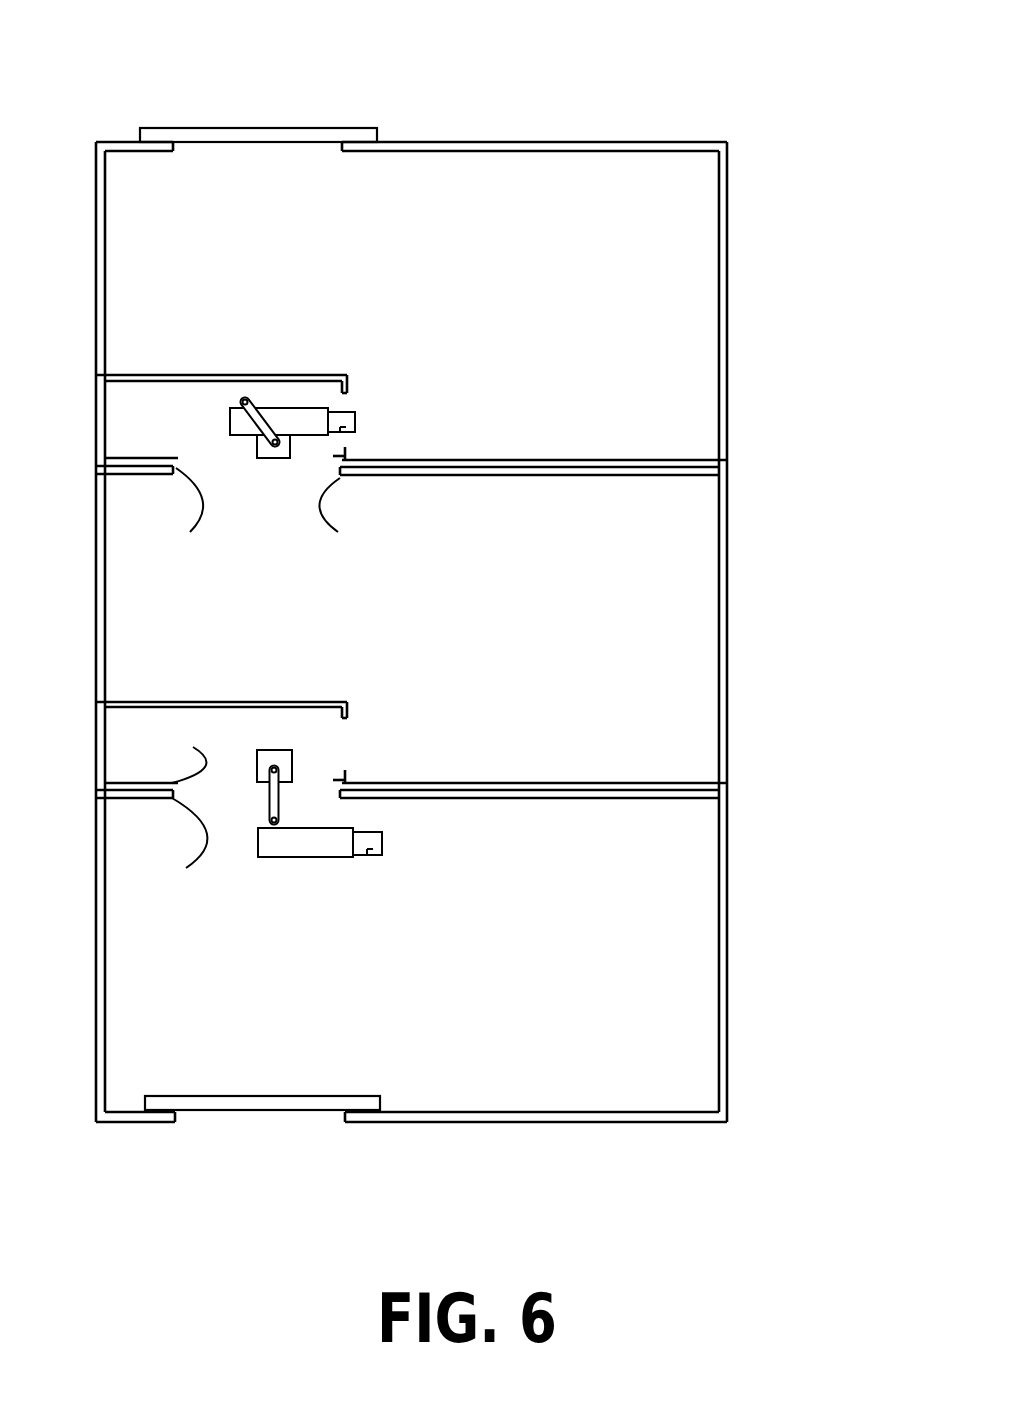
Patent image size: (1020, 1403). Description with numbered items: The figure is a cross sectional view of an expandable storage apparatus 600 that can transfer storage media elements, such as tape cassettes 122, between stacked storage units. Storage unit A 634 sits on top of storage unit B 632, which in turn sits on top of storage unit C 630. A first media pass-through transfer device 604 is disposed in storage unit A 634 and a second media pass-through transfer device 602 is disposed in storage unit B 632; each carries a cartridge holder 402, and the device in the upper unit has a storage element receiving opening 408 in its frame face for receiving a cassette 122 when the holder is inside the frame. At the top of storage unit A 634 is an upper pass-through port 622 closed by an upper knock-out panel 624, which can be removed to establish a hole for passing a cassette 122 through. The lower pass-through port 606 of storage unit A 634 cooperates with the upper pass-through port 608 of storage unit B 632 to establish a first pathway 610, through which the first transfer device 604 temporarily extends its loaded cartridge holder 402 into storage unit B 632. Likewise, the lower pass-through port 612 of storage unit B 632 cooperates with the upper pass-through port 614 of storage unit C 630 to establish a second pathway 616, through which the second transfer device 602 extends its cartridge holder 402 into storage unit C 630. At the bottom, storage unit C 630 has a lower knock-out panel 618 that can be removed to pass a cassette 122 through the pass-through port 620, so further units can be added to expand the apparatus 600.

The expandable storage apparatus 600 is at (614, 70).
The upper knock-out panel 624 is at (237, 128).
The upper pass-through port 622 is at (273, 168).
The storage unit A 634 is at (728, 370).
The first media pass-through transfer device 604 is at (246, 362).
The cartridge holder 402 is at (230, 430).
The storage element receiving opening 408 is at (377, 405).
The lower pass-through port 606 is at (190, 532).
The upper pass-through port 608 is at (338, 532).
The storage unit B 632 is at (728, 692).
The first pathway 610 is at (249, 490).
The second media pass-through transfer device 602 is at (190, 688).
The lower pass-through port 612 is at (169, 755).
The upper pass-through port 614 is at (168, 846).
The second pathway 616 is at (250, 820).
The tape cassette 122 is at (382, 845).
The storage unit C 630 is at (728, 1015).
The lower knock-out panel 618 is at (343, 1096).
The pass-through port 620 is at (265, 1138).